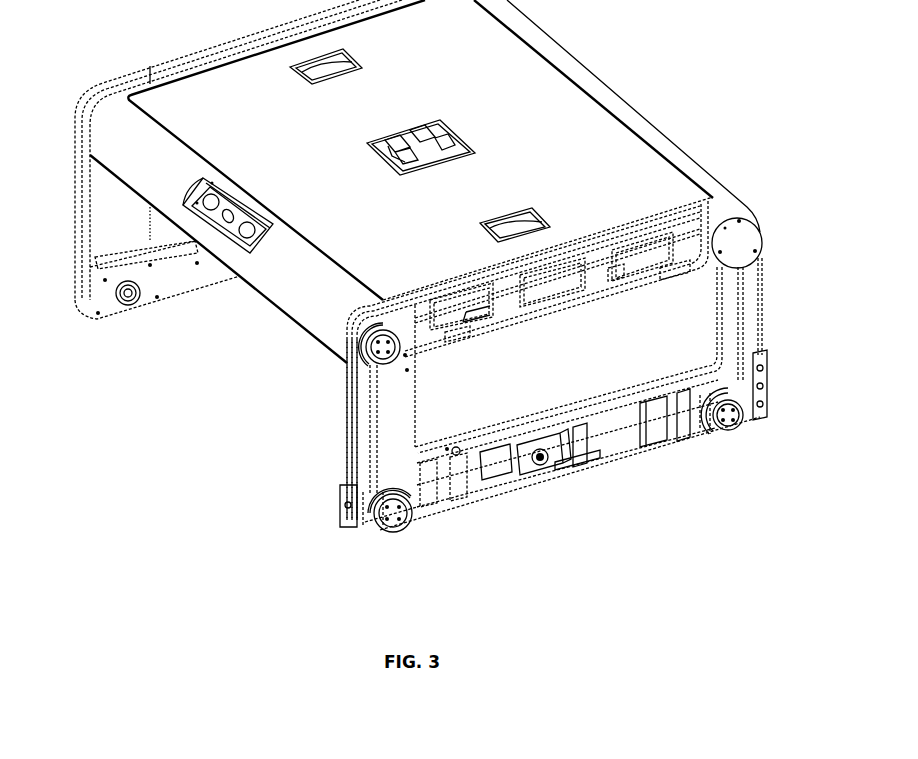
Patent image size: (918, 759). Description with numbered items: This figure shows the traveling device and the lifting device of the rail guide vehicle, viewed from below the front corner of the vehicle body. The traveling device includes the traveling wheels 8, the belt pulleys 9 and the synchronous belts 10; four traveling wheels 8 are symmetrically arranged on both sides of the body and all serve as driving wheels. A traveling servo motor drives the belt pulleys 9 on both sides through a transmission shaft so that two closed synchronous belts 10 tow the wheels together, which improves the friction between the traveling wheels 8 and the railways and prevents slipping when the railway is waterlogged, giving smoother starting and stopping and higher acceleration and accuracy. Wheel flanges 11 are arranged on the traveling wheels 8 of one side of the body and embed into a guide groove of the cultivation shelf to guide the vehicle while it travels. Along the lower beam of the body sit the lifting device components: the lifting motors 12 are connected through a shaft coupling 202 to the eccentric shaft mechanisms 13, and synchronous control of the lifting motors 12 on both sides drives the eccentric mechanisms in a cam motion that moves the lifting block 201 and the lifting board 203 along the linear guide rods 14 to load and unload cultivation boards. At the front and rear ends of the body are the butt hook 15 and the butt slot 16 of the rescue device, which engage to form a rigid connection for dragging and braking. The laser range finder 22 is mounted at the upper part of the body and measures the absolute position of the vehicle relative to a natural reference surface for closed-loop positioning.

The traveling wheel 8 is at (368, 532).
The belt pulley 9 is at (378, 364).
The synchronous belt 10 is at (372, 421).
The wheel flange 11 is at (723, 430).
The lifting motor 12 is at (505, 470).
The eccentric shaft mechanism 13 is at (563, 470).
The linear guide rod 14 is at (655, 407).
The butt hook 15 is at (760, 412).
The butt slot 16 is at (350, 516).
The laser range finder 22 is at (236, 256).
The lifting block 201 is at (593, 465).
The shaft coupling 202 is at (547, 476).
The lifting board 203 is at (483, 443).